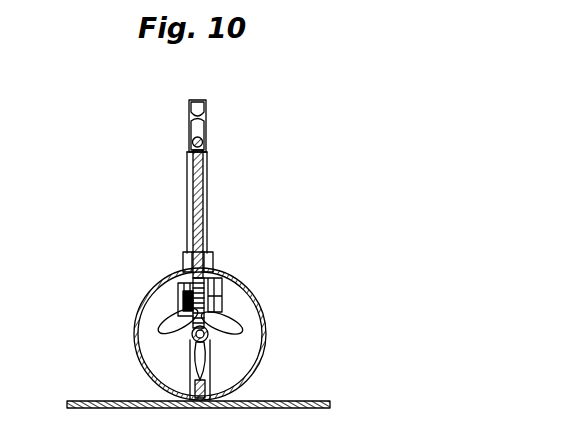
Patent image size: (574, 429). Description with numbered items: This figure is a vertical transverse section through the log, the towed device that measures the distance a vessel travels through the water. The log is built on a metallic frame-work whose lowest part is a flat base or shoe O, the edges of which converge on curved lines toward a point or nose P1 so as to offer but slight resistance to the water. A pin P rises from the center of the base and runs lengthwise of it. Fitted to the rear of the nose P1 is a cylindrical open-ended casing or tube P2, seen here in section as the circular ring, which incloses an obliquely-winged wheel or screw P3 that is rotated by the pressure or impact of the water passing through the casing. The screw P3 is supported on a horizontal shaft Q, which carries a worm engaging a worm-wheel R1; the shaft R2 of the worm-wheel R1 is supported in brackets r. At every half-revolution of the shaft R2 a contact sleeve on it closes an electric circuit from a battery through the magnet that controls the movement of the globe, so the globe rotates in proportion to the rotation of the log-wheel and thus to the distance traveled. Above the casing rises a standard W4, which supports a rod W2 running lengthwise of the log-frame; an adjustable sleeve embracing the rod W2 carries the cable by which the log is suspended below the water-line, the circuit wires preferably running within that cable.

The flat base or shoe O is at (198, 396).
The standard W4 is at (205, 101).
The rod W2 is at (204, 144).
The point or nose P1 is at (188, 221).
The pin P is at (205, 223).
The cylindrical open-ended casing or tube P2 is at (240, 281).
The obliquely-winged wheel or screw P3 is at (221, 320).
The bracket r is at (179, 300).
The shaft R2 is at (218, 300).
The horizontal shaft Q is at (209, 338).
The worm-wheel R1 is at (188, 325).